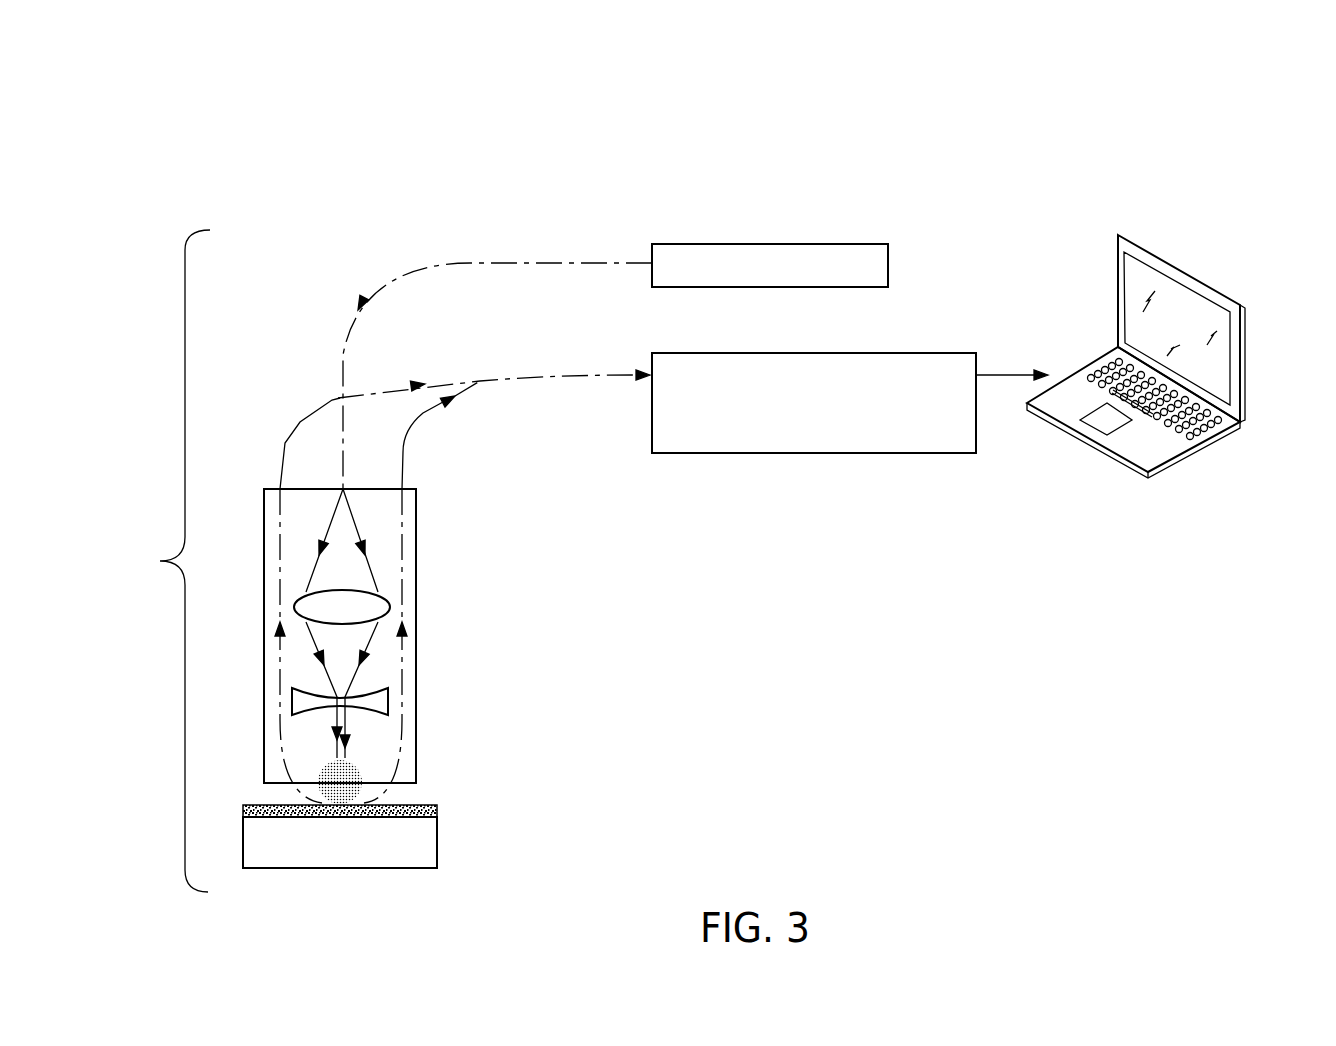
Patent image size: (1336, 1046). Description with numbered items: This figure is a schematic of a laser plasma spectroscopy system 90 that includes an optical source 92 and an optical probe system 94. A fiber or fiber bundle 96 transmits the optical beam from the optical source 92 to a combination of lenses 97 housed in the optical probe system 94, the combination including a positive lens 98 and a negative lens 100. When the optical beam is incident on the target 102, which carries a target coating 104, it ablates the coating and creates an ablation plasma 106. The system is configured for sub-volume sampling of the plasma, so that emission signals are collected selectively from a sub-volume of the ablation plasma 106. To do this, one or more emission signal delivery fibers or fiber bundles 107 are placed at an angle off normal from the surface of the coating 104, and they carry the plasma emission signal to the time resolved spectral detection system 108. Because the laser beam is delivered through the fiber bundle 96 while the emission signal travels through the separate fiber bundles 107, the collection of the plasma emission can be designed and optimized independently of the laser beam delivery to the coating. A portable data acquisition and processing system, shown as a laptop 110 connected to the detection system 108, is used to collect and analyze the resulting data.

The laser plasma spectroscopy system 90 is at (186, 106).
The optical source 92 is at (768, 244).
The optical probe system 94 is at (166, 561).
The fiber bundle 96 is at (529, 263).
The combination of lenses 97 is at (416, 518).
The positive lens 98 is at (378, 605).
The negative lens 100 is at (380, 688).
The target 102 is at (440, 882).
The target coating 104 is at (437, 812).
The ablation plasma 106 is at (355, 778).
The emission signal delivery fiber bundles 107 is at (403, 467).
The time resolved spectral detection system 108 is at (795, 453).
The laptop 110 is at (1245, 362).